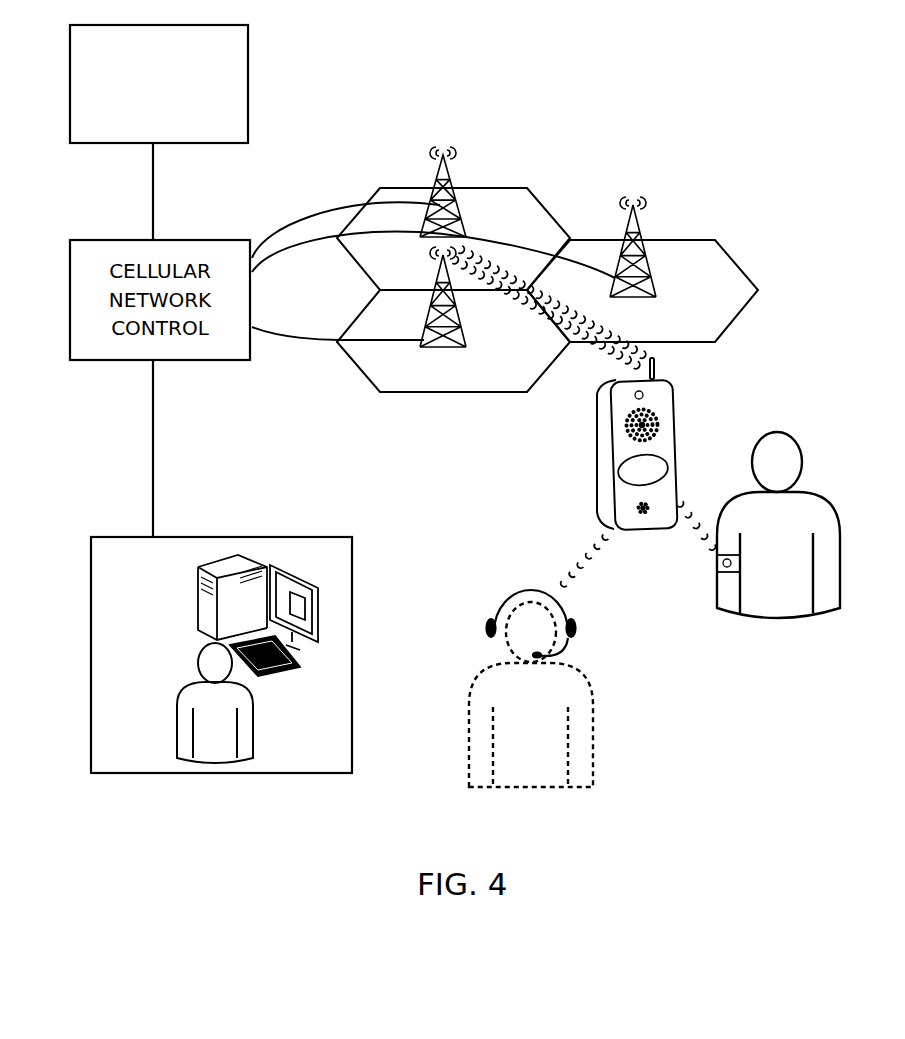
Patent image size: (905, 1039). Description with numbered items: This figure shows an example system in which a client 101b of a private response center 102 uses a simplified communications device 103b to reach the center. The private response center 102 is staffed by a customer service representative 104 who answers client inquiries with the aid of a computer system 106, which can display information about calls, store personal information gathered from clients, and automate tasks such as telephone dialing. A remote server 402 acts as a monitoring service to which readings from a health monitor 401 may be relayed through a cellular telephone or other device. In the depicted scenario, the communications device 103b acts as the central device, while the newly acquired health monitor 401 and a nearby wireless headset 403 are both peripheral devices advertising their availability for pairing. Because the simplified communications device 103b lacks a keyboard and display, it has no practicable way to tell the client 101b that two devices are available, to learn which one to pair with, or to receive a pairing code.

The remote server 402 is at (244, 62).
The private response center 102 is at (113, 548).
The customer service representative 104 is at (187, 707).
The computer system 106 is at (238, 567).
The communications device 103b is at (675, 388).
The wireless headset 403 is at (515, 592).
The health monitor 401 is at (726, 568).
The client 101b is at (779, 600).